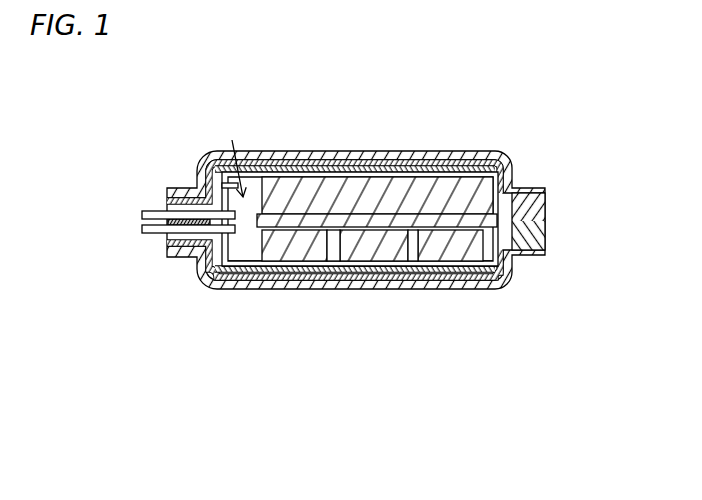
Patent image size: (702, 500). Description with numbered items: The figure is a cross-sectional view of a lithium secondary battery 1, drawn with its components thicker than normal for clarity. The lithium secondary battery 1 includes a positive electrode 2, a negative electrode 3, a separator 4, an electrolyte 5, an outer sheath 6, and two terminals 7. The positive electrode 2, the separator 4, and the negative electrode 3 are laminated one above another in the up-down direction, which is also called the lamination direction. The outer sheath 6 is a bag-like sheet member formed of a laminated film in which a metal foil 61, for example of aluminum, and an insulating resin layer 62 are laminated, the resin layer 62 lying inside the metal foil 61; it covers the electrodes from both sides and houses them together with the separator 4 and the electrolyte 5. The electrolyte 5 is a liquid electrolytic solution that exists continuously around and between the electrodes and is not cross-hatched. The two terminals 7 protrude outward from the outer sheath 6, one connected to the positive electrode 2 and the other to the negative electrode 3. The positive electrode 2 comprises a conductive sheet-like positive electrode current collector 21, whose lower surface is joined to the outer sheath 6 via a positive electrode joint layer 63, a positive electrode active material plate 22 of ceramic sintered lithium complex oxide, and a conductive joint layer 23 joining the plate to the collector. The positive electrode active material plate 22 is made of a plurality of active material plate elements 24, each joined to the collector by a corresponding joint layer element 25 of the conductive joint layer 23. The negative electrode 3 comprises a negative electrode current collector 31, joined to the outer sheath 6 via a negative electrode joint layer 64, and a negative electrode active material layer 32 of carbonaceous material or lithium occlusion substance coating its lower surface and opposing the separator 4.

The lithium secondary battery 1 is at (150, 93).
The positive electrode 2 is at (351, 317).
The positive electrode current collector 21 is at (237, 290).
The positive electrode active material plate 22 is at (262, 340).
The conductive joint layer 23 is at (325, 335).
The active material plate element 24 is at (275, 272).
The joint layer element 25 is at (325, 268).
The negative electrode 3 is at (356, 224).
The negative electrode current collector 31 is at (307, 157).
The negative electrode active material layer 32 is at (355, 192).
The separator 4 is at (547, 209).
The electrolyte 5 is at (235, 158).
The outer sheath 6 is at (361, 245).
The metal foil 61 is at (463, 288).
The resin layer 62 is at (490, 283).
The positive electrode joint layer 63 is at (457, 284).
The negative electrode joint layer 64 is at (437, 172).
The terminal 7 is at (153, 212).